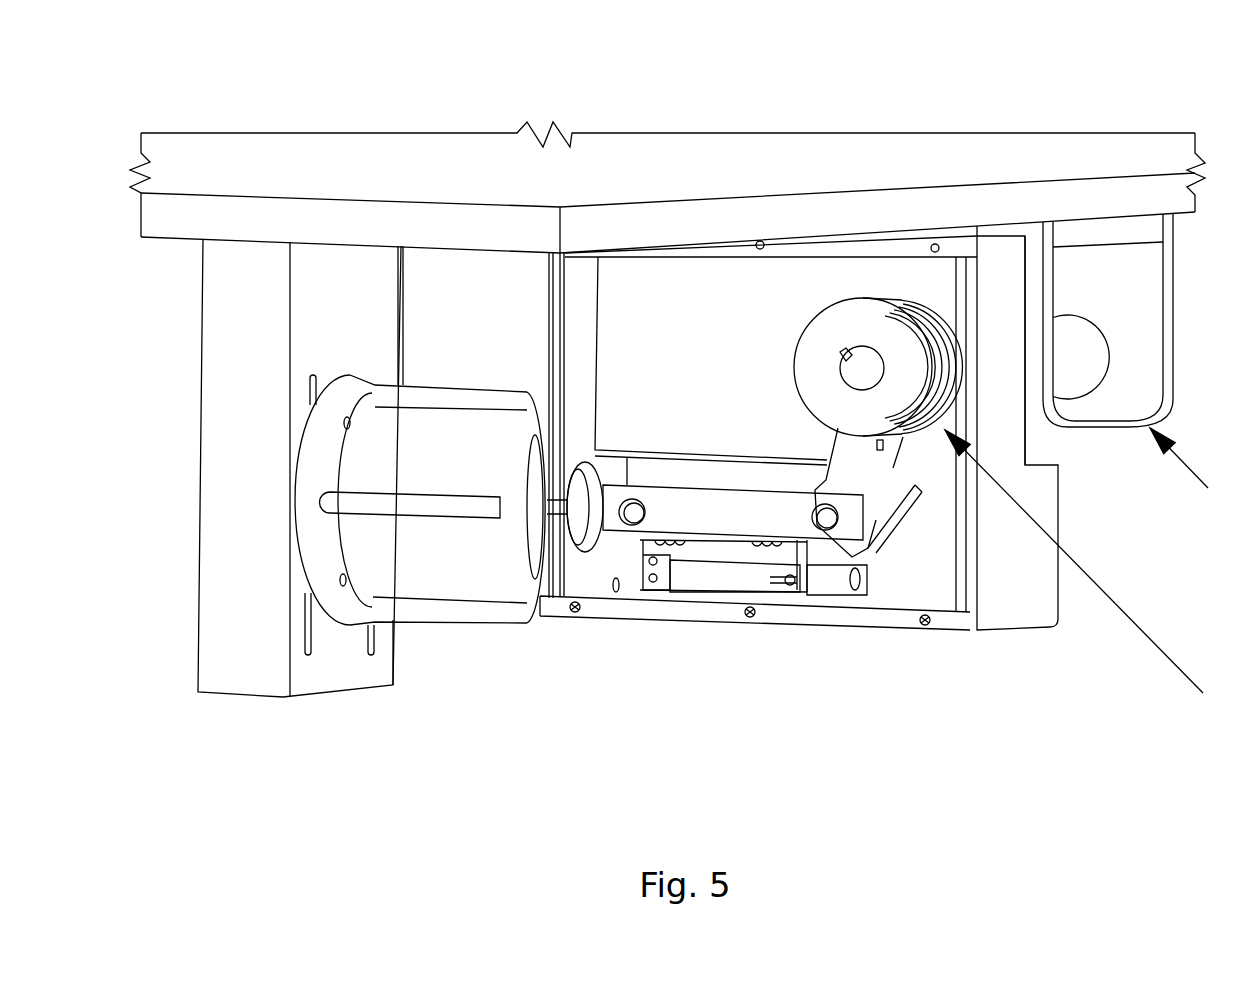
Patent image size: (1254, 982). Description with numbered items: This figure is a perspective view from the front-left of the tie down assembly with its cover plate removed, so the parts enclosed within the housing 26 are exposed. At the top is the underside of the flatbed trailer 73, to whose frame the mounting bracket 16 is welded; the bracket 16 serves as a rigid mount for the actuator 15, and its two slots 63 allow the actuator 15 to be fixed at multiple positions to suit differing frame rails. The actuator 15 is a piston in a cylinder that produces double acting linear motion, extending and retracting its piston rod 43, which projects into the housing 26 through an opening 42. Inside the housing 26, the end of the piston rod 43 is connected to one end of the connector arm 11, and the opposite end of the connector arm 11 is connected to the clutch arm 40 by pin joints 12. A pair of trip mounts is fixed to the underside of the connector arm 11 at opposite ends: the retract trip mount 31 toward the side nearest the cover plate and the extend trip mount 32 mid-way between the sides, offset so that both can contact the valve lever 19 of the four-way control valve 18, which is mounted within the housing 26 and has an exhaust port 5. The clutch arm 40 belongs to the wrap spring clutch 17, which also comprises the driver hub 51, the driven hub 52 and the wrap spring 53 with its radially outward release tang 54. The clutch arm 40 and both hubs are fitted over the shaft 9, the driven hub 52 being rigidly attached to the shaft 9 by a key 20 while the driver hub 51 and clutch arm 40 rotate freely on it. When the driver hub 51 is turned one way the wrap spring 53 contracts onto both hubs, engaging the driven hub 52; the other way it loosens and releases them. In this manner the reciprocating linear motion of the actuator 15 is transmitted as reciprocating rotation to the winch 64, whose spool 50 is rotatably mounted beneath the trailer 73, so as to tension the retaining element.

The trailer 73 is at (644, 160).
The mounting bracket 16 is at (238, 488).
The actuator 15 is at (428, 557).
The slots 63 is at (302, 628).
The piston rod 43 is at (585, 505).
The opening 42 is at (592, 550).
The housing 26 is at (892, 473).
The connector arm 11 is at (722, 513).
The pin joints 12 is at (632, 514).
The retract trip mount 31 is at (650, 578).
The four-way control valve 18 is at (742, 577).
The valve lever 19 is at (772, 583).
The extend trip mount 32 is at (792, 568).
The exhaust port 5 is at (850, 568).
The clutch arm 40 is at (862, 470).
The shaft 9 is at (867, 368).
The release tang 54 is at (885, 410).
The key 20 is at (843, 355).
The driven hub 52 is at (882, 407).
The driver hub 51 is at (925, 297).
The wrap spring 53 is at (948, 355).
The spool 50 is at (1072, 352).
The winch 64 is at (1144, 358).
The wrap spring clutch 17 is at (1013, 535).